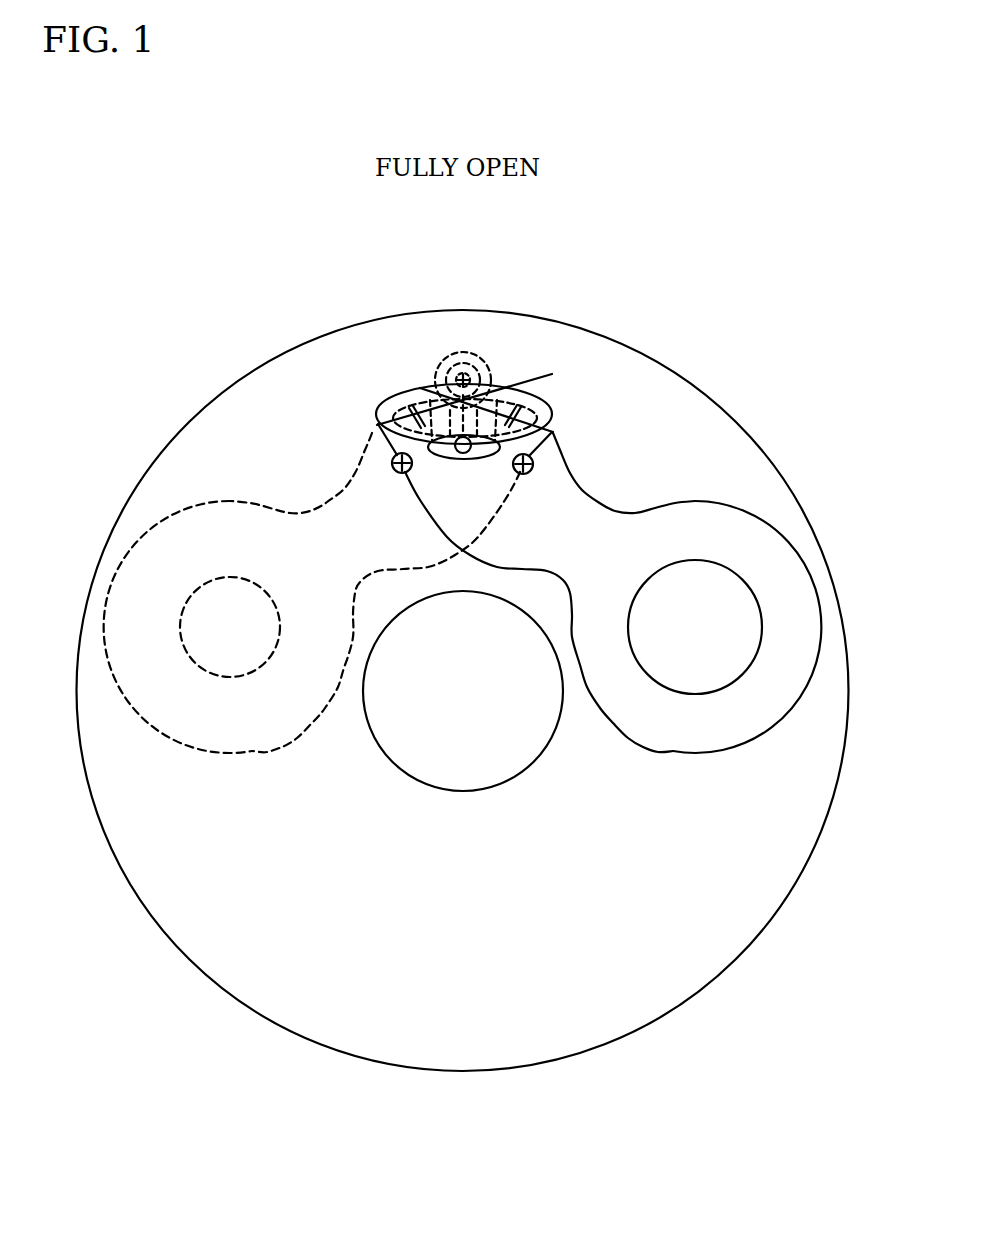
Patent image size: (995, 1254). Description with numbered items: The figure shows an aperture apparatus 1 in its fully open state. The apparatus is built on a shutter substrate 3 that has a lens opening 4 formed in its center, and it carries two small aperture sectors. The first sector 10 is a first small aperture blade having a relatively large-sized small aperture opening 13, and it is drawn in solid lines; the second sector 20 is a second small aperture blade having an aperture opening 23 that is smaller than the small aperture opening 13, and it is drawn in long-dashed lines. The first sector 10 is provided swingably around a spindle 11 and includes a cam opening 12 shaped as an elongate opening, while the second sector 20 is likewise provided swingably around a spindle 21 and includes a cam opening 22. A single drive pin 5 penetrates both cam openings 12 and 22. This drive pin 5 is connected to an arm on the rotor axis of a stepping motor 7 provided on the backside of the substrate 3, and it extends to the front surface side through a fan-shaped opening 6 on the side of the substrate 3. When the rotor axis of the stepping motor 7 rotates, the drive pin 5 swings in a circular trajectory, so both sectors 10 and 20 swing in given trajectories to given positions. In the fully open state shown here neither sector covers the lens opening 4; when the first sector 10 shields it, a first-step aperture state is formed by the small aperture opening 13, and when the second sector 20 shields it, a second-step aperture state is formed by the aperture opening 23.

The aperture apparatus 1 is at (243, 325).
The shutter substrate 3 is at (727, 923).
The lens opening 4 is at (497, 777).
The drive pin 5 is at (492, 472).
The fan-shaped opening 6 is at (420, 386).
The stepping motor 7 is at (492, 386).
The first sector 10 is at (725, 725).
The spindle 11 is at (557, 433).
The cam opening 12 is at (397, 395).
The small aperture opening 13 is at (693, 655).
The second sector 20 is at (153, 695).
The spindle 21 is at (393, 457).
The cam opening 22 is at (552, 374).
The aperture opening 23 is at (237, 638).